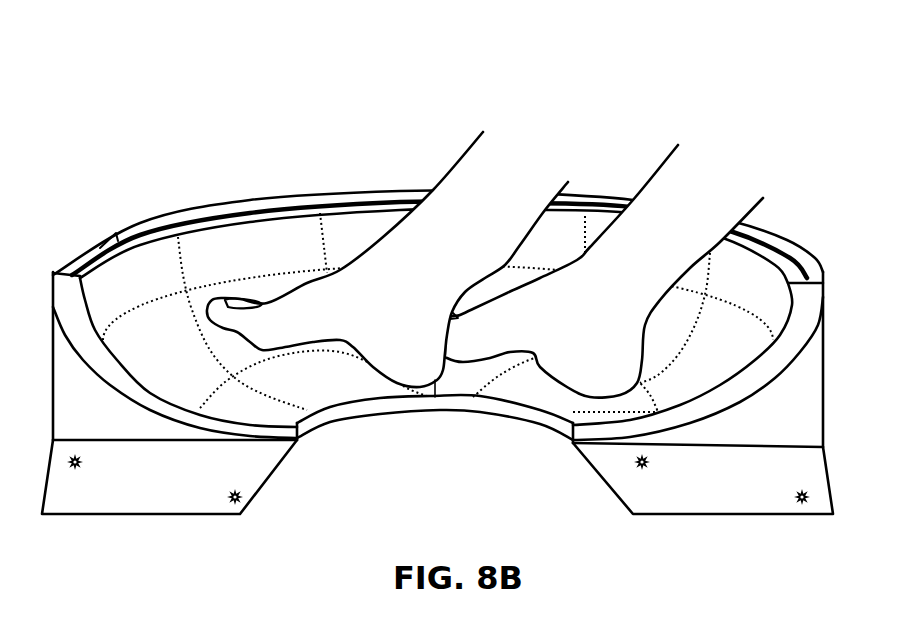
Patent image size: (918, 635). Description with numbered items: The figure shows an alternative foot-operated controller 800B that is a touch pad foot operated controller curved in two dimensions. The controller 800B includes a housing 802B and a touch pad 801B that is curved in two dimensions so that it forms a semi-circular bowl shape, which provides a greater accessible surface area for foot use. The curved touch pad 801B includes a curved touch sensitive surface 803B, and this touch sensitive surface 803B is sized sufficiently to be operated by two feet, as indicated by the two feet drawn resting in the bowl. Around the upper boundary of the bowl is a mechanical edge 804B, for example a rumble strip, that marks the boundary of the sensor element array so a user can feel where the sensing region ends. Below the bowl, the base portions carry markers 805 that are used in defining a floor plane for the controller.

The foot-operated controller 800B is at (137, 78).
The touch pad 801B is at (95, 244).
The housing 802B is at (124, 390).
The touch sensitive surface 803B is at (200, 361).
The mechanical edge 804B is at (203, 214).
The base 805 is at (247, 492).